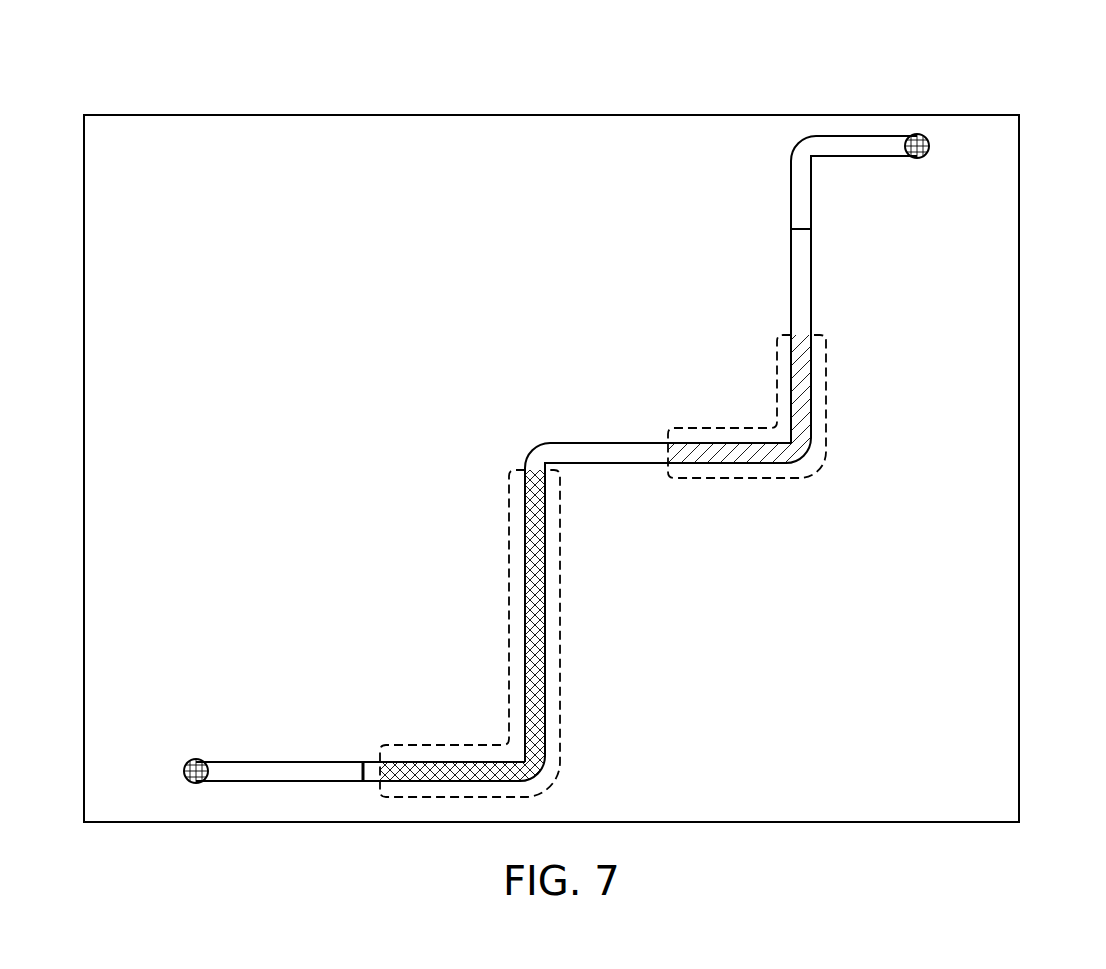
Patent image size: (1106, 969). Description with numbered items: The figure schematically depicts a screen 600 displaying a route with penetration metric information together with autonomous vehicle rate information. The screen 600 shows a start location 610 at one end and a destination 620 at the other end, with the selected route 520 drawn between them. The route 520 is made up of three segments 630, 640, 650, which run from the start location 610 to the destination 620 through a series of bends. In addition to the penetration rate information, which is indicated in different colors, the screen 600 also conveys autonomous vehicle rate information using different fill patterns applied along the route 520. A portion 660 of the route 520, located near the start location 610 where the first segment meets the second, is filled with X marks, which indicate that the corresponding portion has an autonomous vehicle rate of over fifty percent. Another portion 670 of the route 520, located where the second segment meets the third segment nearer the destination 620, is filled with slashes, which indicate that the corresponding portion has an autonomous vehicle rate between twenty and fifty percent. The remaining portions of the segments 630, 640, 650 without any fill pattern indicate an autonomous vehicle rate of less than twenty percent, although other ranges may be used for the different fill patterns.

The route 520 is at (729, 489).
The screen 600 is at (1020, 123).
The start location 610 is at (185, 768).
The destination 620 is at (929, 147).
The segment 630 is at (280, 760).
The segment 640 is at (550, 448).
The segment 650 is at (800, 198).
The portion of the route 660 is at (560, 750).
The portion of the route 670 is at (826, 387).